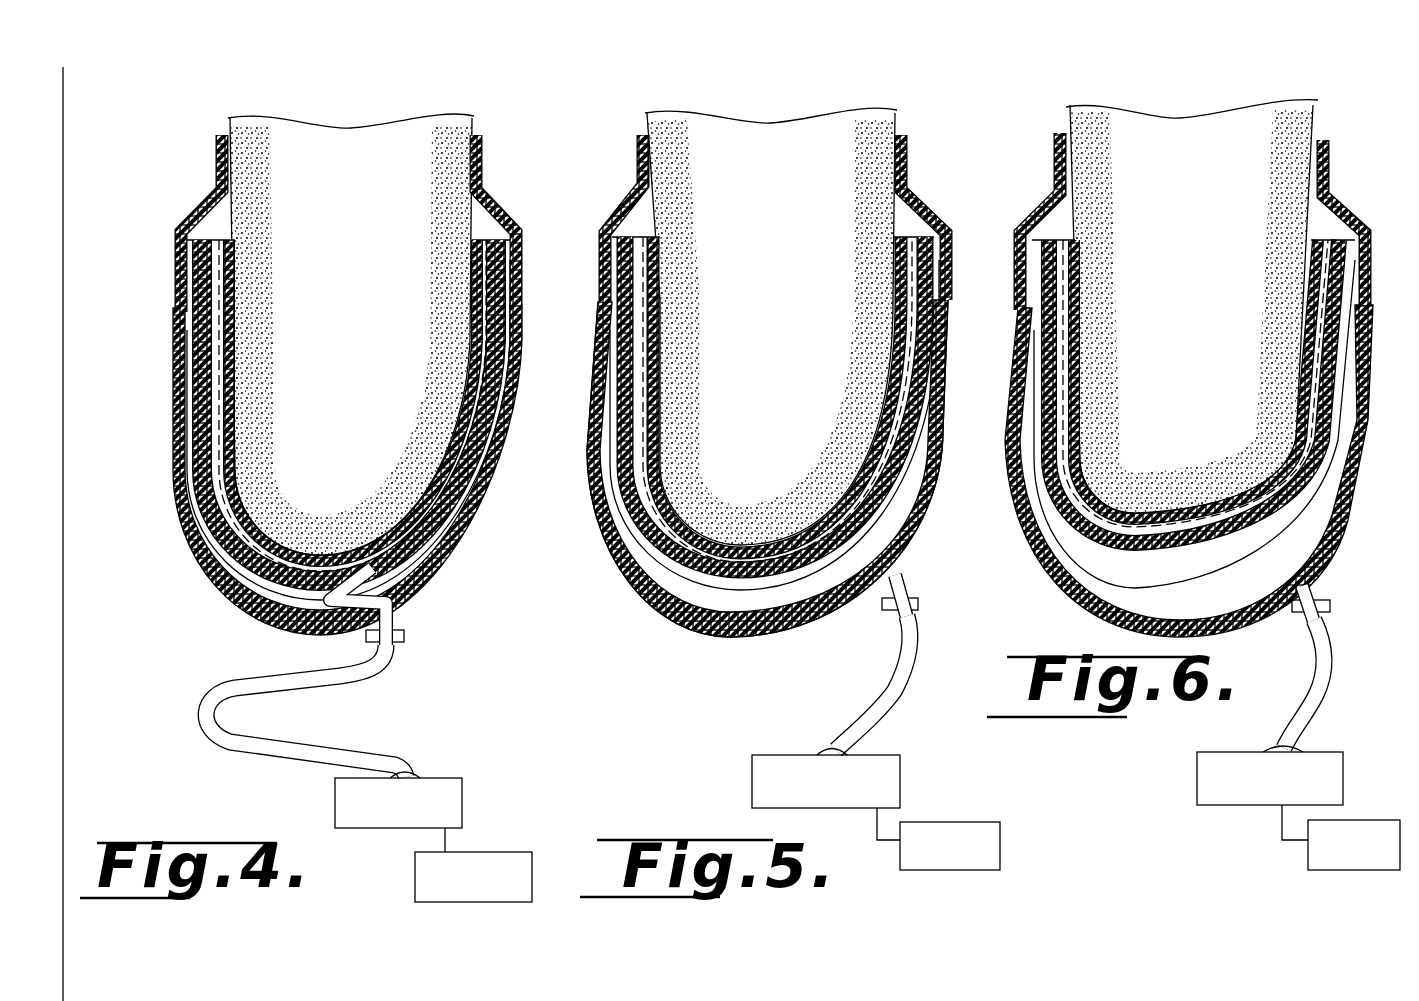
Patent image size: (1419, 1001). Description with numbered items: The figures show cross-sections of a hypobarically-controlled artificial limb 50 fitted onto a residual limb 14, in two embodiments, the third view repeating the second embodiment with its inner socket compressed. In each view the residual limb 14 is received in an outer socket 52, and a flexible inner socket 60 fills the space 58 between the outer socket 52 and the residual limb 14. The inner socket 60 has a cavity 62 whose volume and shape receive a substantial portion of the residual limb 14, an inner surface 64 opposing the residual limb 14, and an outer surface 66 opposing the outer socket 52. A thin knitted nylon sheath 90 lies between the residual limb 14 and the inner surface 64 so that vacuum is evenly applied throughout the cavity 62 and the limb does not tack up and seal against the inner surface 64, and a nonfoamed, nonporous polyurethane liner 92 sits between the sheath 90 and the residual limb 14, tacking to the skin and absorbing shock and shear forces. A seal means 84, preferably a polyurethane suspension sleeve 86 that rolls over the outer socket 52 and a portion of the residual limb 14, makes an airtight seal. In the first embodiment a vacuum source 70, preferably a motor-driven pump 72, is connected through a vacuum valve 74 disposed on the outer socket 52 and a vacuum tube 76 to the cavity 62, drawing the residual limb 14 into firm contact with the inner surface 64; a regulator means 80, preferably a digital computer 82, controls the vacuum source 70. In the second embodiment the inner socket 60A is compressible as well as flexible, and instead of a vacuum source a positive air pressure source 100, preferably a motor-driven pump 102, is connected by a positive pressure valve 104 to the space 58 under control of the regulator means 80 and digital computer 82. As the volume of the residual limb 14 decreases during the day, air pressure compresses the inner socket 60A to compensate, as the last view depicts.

In FIG. 4, the residual limb 14 is at (228, 178).
In FIG. 5, the residual limb 14 is at (640, 187).
In FIG. 6, the residual limb 14 is at (1054, 190).
In FIG. 4, the hypobarically-controlled artificial limb 50 is at (142, 240).
In FIG. 5, the hypobarically-controlled artificial limb 50 is at (590, 195).
In FIG. 6, the hypobarically-controlled artificial limb 50 is at (1010, 185).
In FIG. 4, the outer socket 52 is at (495, 572).
In FIG. 5, the outer socket 52 is at (942, 492).
In FIG. 6, the outer socket 52 is at (1366, 372).
In FIG. 4, the space 58 is at (490, 505).
In FIG. 5, the space 58 is at (910, 522).
In FIG. 6, the space 58 is at (1312, 575).
In FIG. 4, the inner socket 60 is at (500, 398).
In FIG. 5, the inner socket 60A is at (945, 420).
In FIG. 6, the inner socket 60A is at (1205, 548).
In FIG. 4, the cavity 62 is at (482, 318).
In FIG. 4, the inner surface 64 is at (205, 468).
In FIG. 4, the outer surface 66 is at (192, 520).
In FIG. 5, the outer surface 66 is at (600, 432).
In FIG. 4, the vacuum source 70 is at (417, 764).
In FIG. 4, the motor-driven pump 72 is at (458, 778).
In FIG. 4, the vacuum valve 74 is at (404, 630).
In FIG. 4, the vacuum tube 76 is at (300, 625).
In FIG. 4, the regulator means 80 is at (485, 849).
In FIG. 5, the regulator means 80 is at (938, 818).
In FIG. 6, the regulator means 80 is at (1295, 844).
In FIG. 4, the digital computer 82 is at (512, 852).
In FIG. 5, the digital computer 82 is at (970, 822).
In FIG. 6, the digital computer 82 is at (1308, 862).
In FIG. 4, the seal means 84 is at (518, 221).
In FIG. 5, the seal means 84 is at (943, 217).
In FIG. 6, the seal means 84 is at (1361, 222).
In FIG. 4, the suspension sleeve 86 is at (482, 196).
In FIG. 5, the suspension sleeve 86 is at (940, 225).
In FIG. 6, the suspension sleeve 86 is at (1357, 212).
In FIG. 4, the sheath 90 is at (222, 305).
In FIG. 5, the sheath 90 is at (647, 258).
In FIG. 4, the liner 92 is at (218, 362).
In FIG. 5, the liner 92 is at (642, 325).
In FIG. 5, the positive air pressure source 100 is at (862, 752).
In FIG. 6, the positive air pressure source 100 is at (1221, 773).
In FIG. 5, the motor-driven pump 102 is at (890, 755).
In FIG. 6, the motor-driven pump 102 is at (1197, 790).
In FIG. 5, the positive pressure valve 104 is at (875, 610).
In FIG. 6, the positive pressure valve 104 is at (1324, 614).